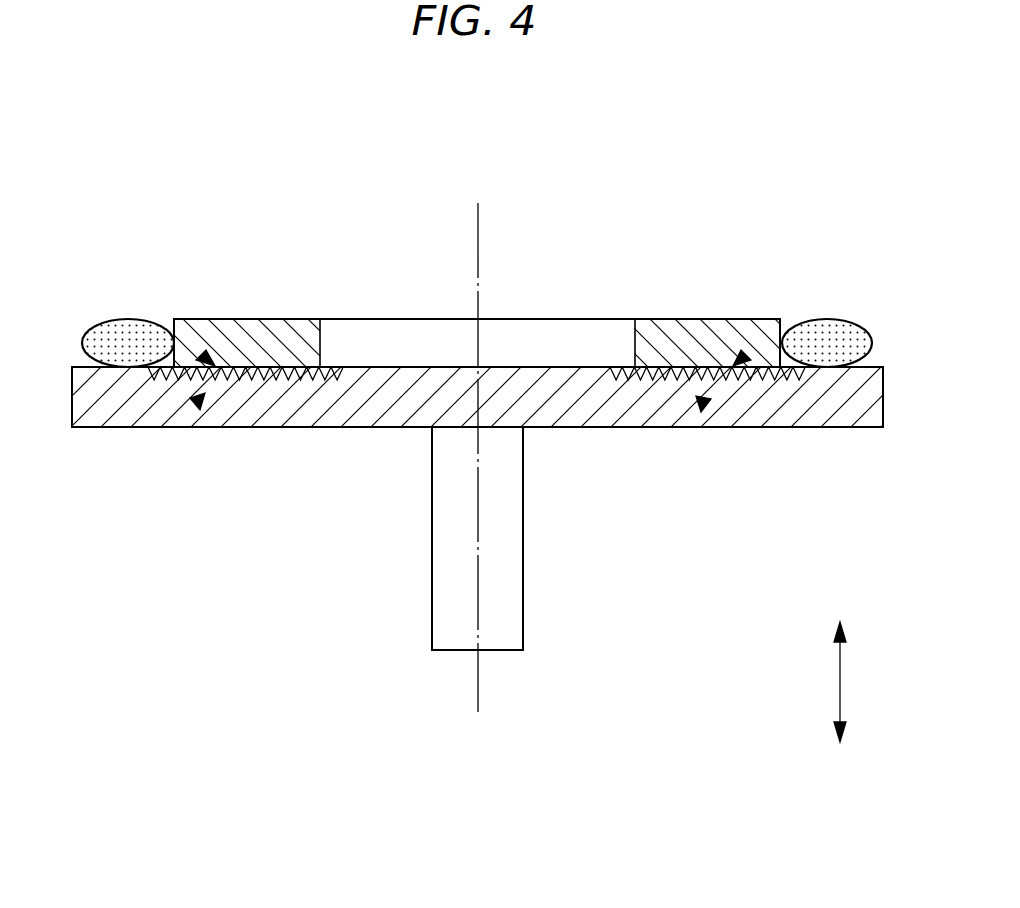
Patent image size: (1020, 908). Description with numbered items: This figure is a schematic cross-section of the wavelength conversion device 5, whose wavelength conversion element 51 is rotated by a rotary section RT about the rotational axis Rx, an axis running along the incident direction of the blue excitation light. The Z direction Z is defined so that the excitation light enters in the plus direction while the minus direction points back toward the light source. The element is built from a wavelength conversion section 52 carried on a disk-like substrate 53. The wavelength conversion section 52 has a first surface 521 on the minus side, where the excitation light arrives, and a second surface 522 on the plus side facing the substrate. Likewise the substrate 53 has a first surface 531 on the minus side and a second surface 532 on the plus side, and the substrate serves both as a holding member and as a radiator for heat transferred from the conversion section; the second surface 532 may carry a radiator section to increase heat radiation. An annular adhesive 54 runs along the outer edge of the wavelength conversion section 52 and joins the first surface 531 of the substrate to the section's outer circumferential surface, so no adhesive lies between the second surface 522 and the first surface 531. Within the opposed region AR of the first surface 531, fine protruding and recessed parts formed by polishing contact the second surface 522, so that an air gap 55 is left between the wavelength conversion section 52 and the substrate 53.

The wavelength conversion device 5 is at (788, 178).
The wavelength conversion element 51 is at (72, 390).
The wavelength conversion section 52 is at (692, 318).
The first surface 521 is at (277, 318).
The second surface 522 is at (277, 377).
The substrate 53 is at (785, 417).
The first surface 531 is at (870, 367).
The second surface 532 is at (870, 427).
The adhesive 54 is at (128, 332).
The air gap 55 is at (202, 357).
The opposed region AR is at (195, 407).
The rotary section RT is at (523, 608).
The rotational axis Rx is at (478, 680).
The Z direction Z is at (840, 682).